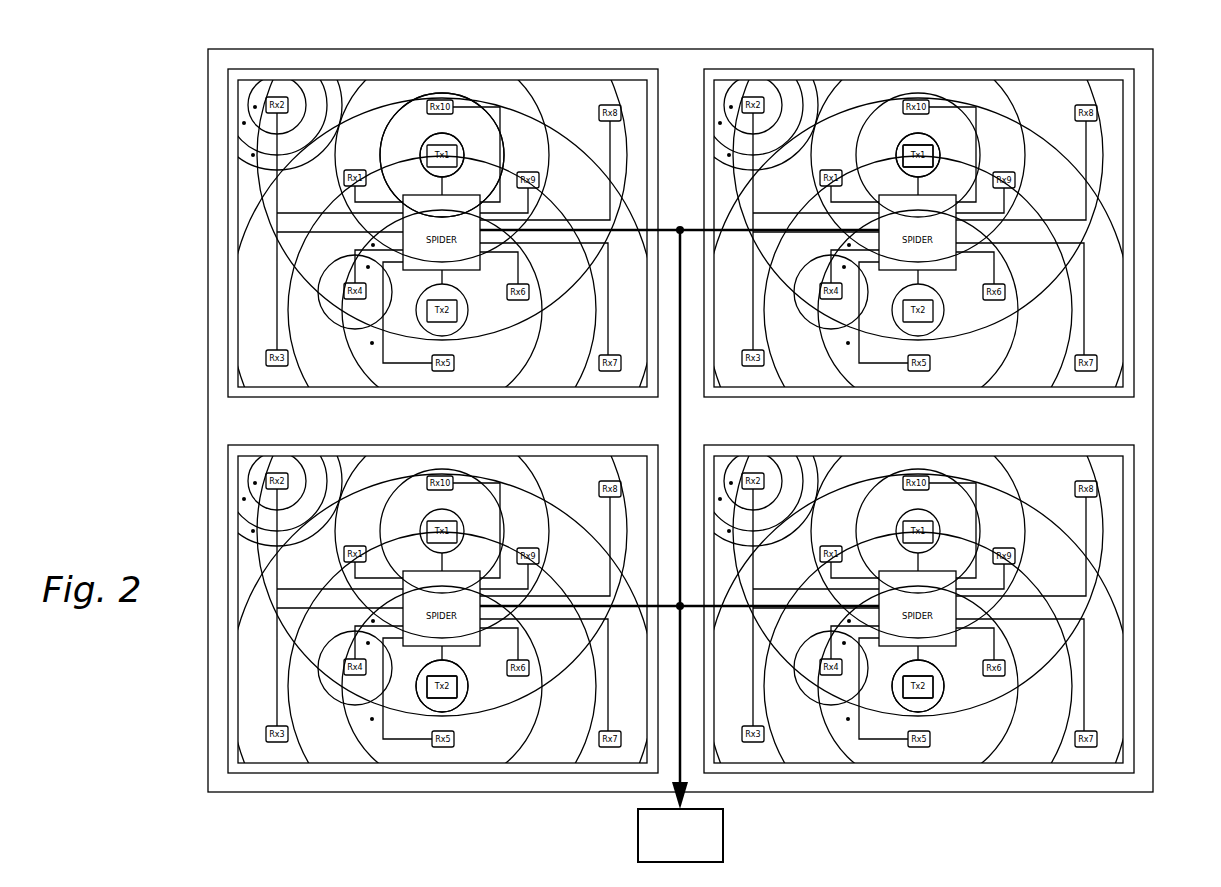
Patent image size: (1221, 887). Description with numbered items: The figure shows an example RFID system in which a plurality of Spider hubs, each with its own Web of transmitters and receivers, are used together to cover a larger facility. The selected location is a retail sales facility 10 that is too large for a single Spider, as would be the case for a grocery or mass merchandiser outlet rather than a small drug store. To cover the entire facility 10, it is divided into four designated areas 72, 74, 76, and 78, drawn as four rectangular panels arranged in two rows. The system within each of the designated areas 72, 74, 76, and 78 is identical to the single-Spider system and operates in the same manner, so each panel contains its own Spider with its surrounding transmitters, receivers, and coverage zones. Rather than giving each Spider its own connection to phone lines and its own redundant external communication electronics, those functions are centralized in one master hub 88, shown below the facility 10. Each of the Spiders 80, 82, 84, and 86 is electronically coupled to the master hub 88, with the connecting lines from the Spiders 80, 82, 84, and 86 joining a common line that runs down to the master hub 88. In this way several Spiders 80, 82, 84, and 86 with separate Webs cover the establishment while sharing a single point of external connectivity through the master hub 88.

The retail sales facility 10 is at (1158, 238).
The designated area 72 is at (284, 75).
The designated area 74 is at (1053, 75).
The designated area 76 is at (1040, 768).
The designated area 78 is at (362, 768).
The Spider 80 is at (391, 122).
The Spider 82 is at (962, 160).
The Spider 84 is at (956, 740).
The Spider 86 is at (500, 738).
The master hub 88 is at (638, 837).